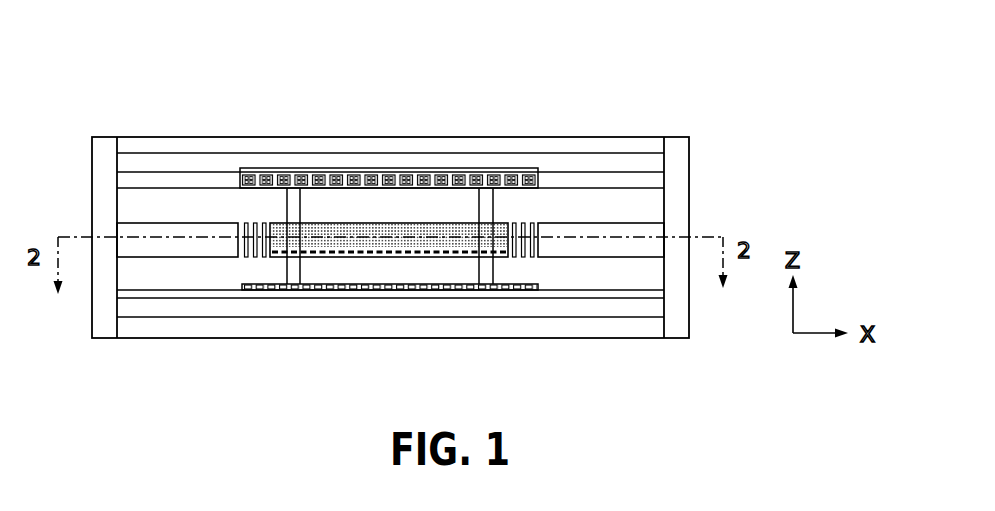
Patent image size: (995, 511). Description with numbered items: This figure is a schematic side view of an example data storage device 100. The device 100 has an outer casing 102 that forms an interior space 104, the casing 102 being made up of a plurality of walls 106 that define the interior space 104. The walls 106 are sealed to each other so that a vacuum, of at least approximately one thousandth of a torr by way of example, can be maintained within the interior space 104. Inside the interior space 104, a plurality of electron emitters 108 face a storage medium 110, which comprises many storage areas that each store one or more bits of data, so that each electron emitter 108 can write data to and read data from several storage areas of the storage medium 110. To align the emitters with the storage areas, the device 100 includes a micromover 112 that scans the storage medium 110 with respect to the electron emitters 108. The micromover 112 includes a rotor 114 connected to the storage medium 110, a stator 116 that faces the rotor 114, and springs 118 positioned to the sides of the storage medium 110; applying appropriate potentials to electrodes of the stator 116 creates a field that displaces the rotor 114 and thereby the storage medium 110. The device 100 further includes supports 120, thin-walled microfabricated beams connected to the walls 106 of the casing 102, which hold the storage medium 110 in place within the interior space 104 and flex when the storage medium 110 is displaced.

The data storage device 100 is at (774, 56).
The outer casing 102 is at (722, 174).
The interior space 104 is at (152, 190).
The walls 106 is at (559, 142).
The electron emitters 108 is at (293, 172).
The storage medium 110 is at (417, 222).
The micromover 112 is at (225, 320).
The rotor 114 is at (362, 257).
The stator 116 is at (334, 291).
The springs 118 is at (236, 211).
The supports 120 is at (299, 196).